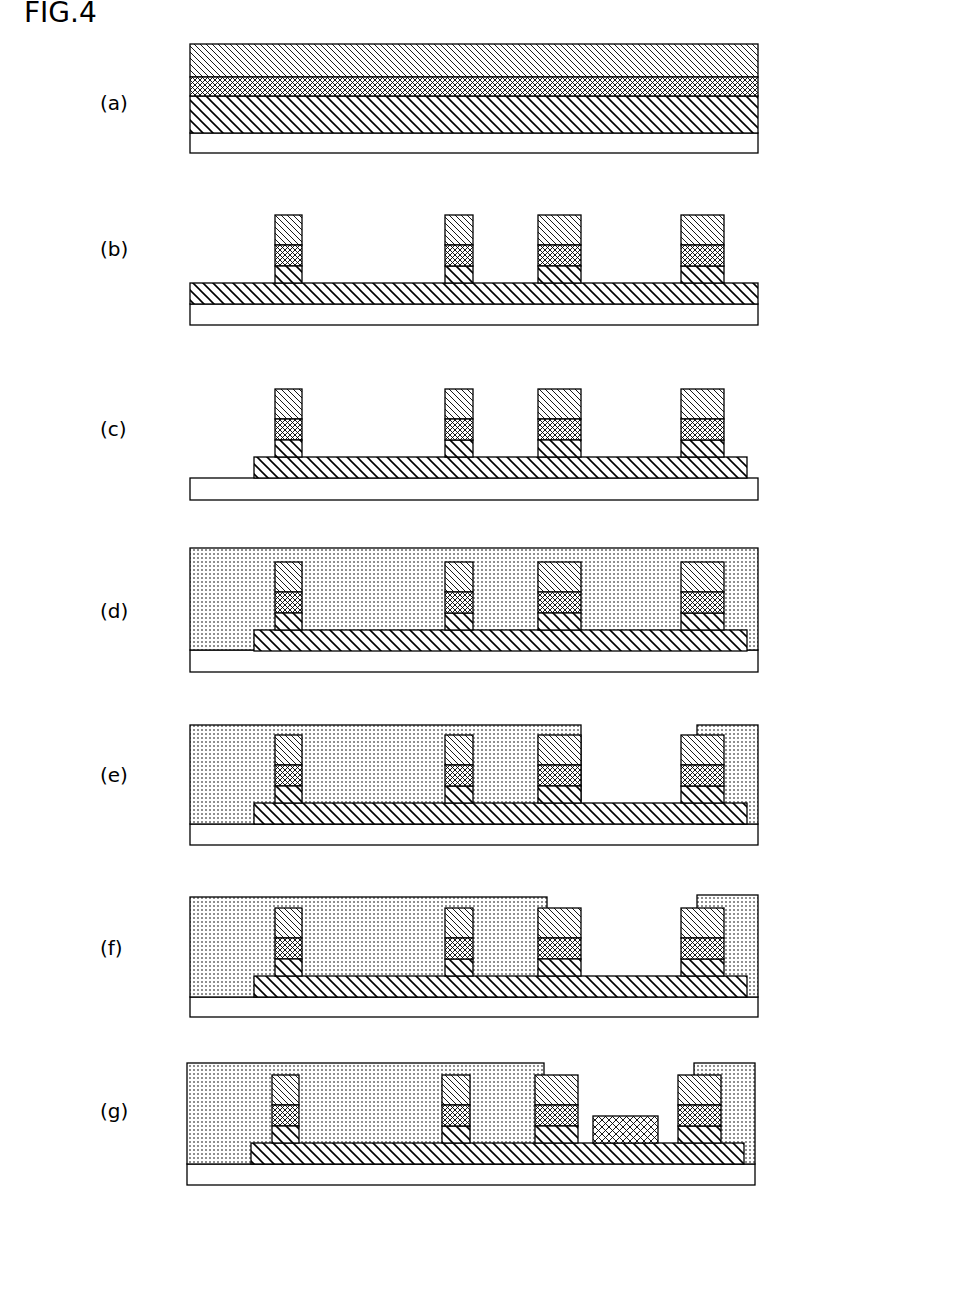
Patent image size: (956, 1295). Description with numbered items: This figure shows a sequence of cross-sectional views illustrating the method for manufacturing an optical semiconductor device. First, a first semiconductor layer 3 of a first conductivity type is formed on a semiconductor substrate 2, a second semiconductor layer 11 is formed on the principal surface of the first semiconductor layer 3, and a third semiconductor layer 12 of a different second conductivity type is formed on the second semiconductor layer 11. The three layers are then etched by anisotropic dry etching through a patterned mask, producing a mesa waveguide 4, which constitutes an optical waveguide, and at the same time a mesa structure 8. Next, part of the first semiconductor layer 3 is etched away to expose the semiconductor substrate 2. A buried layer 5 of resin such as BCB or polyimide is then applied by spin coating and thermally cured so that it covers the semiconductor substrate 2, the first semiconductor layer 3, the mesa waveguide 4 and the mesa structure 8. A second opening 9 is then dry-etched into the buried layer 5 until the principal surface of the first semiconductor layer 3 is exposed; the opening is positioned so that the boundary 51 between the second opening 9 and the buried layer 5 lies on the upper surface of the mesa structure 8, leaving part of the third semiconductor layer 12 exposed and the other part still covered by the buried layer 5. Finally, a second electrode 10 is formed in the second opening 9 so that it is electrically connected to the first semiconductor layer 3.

The semiconductor substrate 2 is at (718, 148).
The first semiconductor layer 3 is at (745, 112).
The mesa waveguide 4 is at (270, 220).
The buried layer 5 is at (640, 580).
The mesa structure 8 is at (528, 220).
The second opening 9 is at (628, 775).
The second electrode 10 is at (633, 1108).
The second semiconductor layer 11 is at (745, 85).
The third semiconductor layer 12 is at (742, 58).
The boundary 51 is at (548, 735).